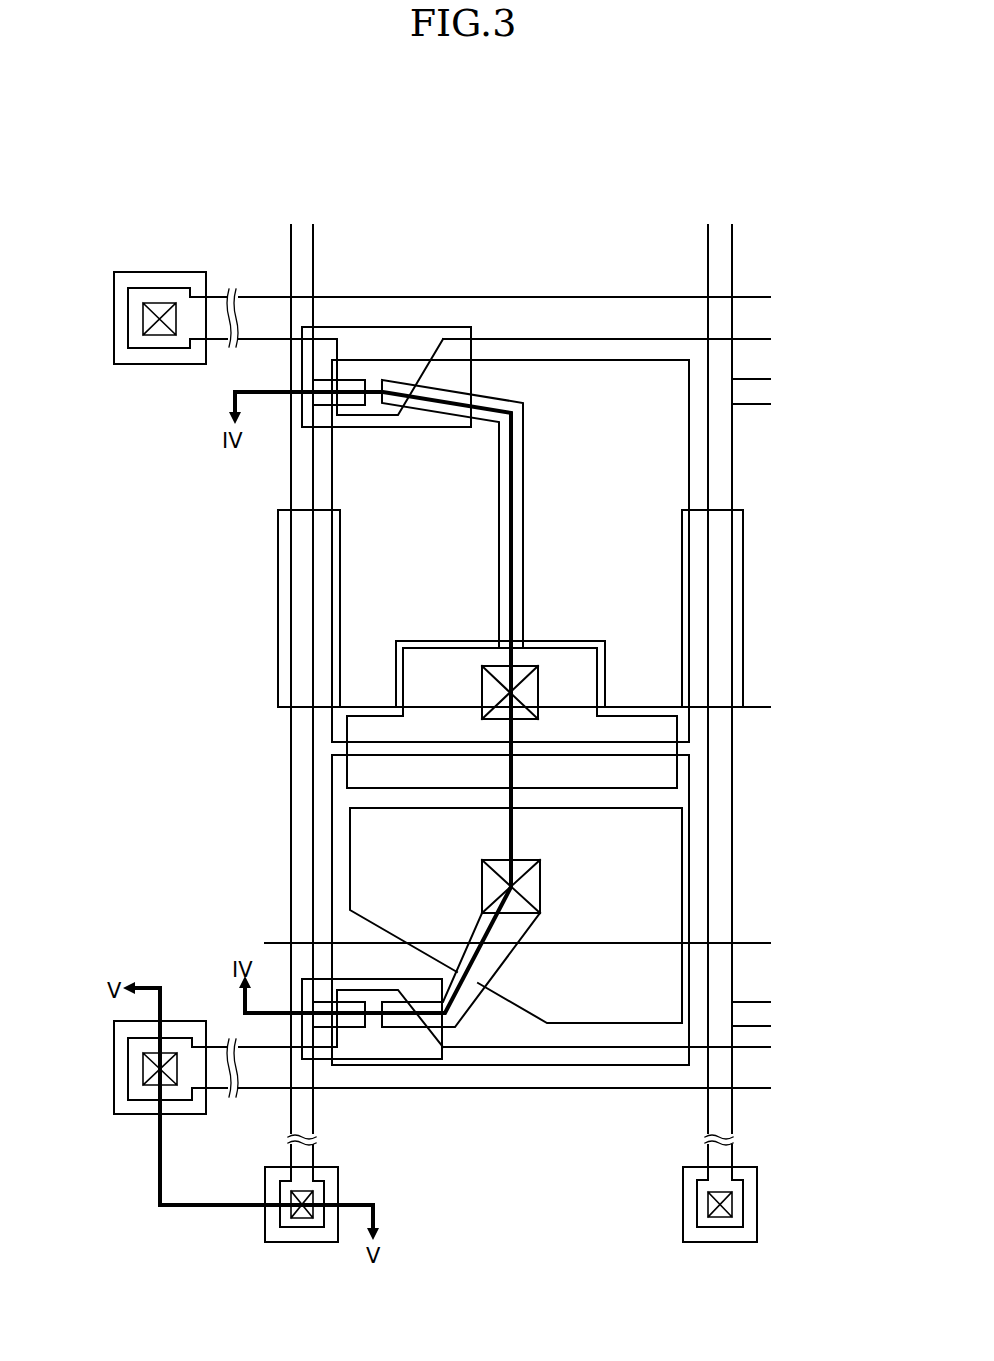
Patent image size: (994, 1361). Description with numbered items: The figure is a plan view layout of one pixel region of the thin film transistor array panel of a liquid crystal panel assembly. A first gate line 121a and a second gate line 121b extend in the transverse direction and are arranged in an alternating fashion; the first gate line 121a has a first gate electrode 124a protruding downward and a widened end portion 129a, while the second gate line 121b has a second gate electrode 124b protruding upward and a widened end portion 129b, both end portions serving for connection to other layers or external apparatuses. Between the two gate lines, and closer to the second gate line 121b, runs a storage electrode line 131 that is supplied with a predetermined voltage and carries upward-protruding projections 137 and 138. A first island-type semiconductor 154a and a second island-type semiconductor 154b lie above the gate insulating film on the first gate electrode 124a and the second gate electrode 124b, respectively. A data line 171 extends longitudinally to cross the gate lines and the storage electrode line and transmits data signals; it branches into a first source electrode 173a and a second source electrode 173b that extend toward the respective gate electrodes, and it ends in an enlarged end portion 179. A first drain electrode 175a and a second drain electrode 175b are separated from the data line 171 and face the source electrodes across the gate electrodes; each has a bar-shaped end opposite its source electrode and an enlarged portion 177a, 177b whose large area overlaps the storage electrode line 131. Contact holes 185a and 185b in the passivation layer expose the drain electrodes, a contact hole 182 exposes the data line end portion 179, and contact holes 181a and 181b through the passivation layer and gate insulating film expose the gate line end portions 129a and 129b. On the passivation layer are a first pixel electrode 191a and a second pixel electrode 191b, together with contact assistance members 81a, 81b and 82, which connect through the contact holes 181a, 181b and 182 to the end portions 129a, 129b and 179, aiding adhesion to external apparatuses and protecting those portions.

The first gate line 121a is at (621, 338).
The second gate line 121b is at (662, 1090).
The first gate electrode 124a is at (372, 417).
The second gate electrode 124b is at (435, 1033).
The end portion of first gate line 129a is at (128, 299).
The end portion of second gate line 129b is at (128, 1049).
The storage electrode line 131 is at (278, 706).
The projection of storage electrode line 137 is at (566, 641).
The projection of storage electrode line 138 is at (745, 612).
The first island-type semiconductor 154a is at (402, 326).
The second island-type semiconductor 154b is at (388, 1060).
The data line 171 is at (709, 459).
The first source electrode 173a is at (350, 378).
The second source electrode 173b is at (358, 1030).
The first drain electrode 175a is at (453, 388).
The second drain electrode 175b is at (420, 1030).
The enlarged portion of first drain electrode 177a is at (677, 723).
The enlarged portion of second drain electrode 177b is at (682, 845).
The end portion of data line 179 is at (290, 1242).
The contact hole 181a is at (143, 320).
The contact hole 181b is at (143, 1069).
The contact hole 182 is at (306, 1228).
The contact hole 185a is at (540, 680).
The contact hole 185b is at (540, 900).
The first pixel electrode 191a is at (692, 553).
The second pixel electrode 191b is at (690, 966).
The contact assistance member 81a is at (114, 355).
The contact assistance member 81b is at (114, 1104).
The contact assistance member 82 is at (328, 1242).